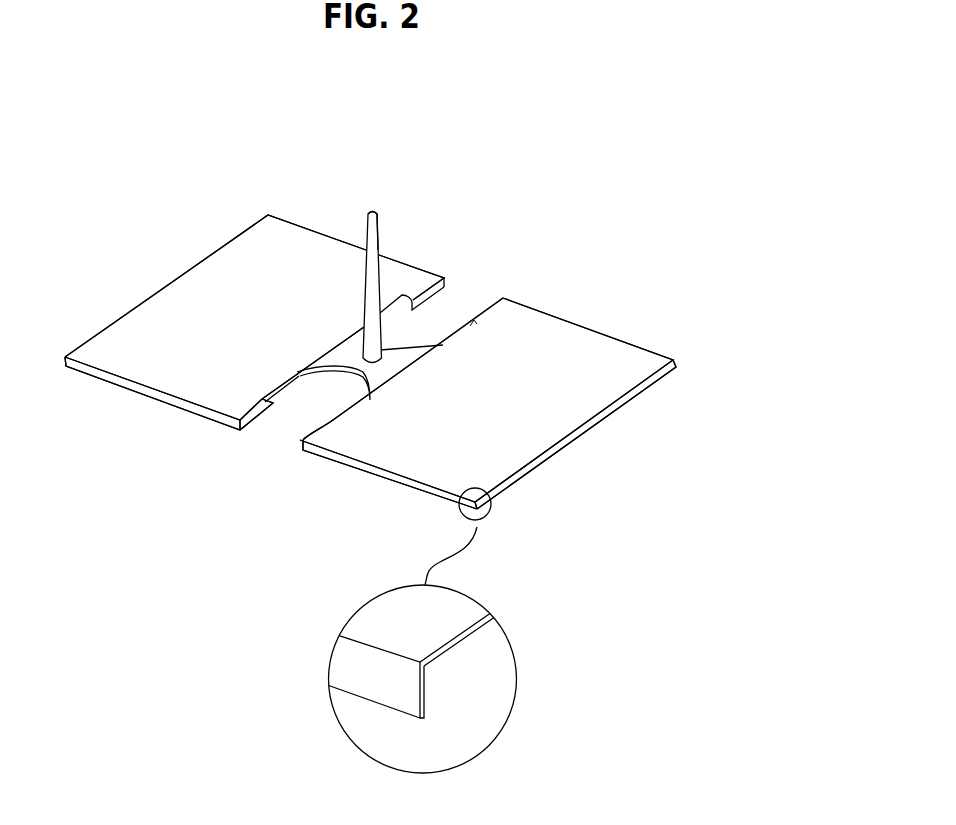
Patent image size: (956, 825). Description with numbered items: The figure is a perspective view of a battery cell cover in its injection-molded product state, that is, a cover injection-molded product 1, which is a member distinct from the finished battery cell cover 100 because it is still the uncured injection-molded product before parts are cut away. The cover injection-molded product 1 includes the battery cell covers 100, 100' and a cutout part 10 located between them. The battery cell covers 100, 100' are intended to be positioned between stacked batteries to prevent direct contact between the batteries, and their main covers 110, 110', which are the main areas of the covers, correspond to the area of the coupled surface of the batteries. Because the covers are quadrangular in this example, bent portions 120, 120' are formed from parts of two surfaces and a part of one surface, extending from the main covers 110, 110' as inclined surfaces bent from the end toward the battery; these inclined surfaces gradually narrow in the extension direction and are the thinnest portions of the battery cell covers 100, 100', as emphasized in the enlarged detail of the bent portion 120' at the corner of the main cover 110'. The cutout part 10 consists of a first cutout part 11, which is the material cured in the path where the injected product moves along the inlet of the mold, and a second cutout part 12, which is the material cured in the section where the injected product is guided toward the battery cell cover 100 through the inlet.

The cover injection-molded product 1 is at (90, 96).
The cutout part 10 is at (345, 202).
The first cutout part 11 is at (380, 259).
The second cutout part 12 is at (337, 383).
The battery cell cover 100 is at (254, 293).
The battery cell cover 100' is at (488, 373).
The main cover 110 is at (254, 317).
The main cover 110' is at (478, 516).
The bent portion 120 is at (169, 397).
The bent portion 120' is at (467, 564).